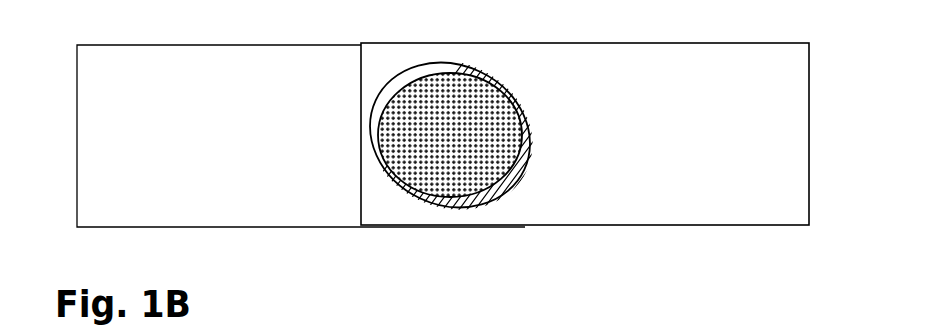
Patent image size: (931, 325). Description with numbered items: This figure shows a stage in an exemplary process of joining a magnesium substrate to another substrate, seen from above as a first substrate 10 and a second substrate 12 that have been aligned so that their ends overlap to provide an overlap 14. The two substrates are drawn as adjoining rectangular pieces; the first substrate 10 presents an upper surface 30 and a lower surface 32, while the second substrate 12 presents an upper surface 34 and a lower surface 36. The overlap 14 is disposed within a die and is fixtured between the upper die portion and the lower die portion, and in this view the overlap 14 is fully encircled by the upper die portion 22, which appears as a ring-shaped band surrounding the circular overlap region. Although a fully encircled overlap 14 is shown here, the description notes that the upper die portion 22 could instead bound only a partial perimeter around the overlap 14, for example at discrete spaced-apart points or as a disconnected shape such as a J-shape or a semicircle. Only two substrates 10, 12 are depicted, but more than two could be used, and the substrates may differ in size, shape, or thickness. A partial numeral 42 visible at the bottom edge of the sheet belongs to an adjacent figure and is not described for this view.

The first substrate 10 is at (173, 64).
The second substrate 12 is at (723, 60).
The overlap 14 is at (447, 64).
The upper die portion 22 is at (494, 74).
The upper surface 30 is at (245, 120).
The lower surface 32 is at (220, 45).
The upper surface 34 is at (674, 120).
The lower surface 36 is at (732, 226).
The partial numeral from adjacent figure 42 is at (361, 318).